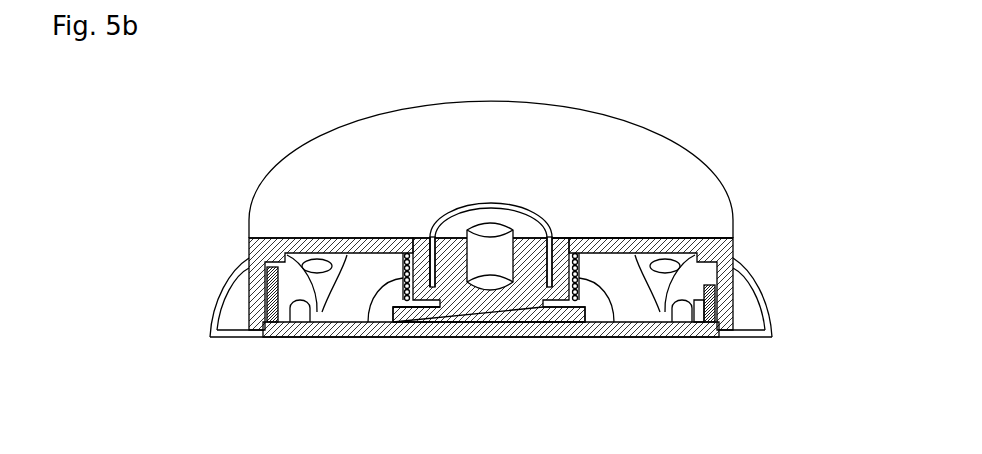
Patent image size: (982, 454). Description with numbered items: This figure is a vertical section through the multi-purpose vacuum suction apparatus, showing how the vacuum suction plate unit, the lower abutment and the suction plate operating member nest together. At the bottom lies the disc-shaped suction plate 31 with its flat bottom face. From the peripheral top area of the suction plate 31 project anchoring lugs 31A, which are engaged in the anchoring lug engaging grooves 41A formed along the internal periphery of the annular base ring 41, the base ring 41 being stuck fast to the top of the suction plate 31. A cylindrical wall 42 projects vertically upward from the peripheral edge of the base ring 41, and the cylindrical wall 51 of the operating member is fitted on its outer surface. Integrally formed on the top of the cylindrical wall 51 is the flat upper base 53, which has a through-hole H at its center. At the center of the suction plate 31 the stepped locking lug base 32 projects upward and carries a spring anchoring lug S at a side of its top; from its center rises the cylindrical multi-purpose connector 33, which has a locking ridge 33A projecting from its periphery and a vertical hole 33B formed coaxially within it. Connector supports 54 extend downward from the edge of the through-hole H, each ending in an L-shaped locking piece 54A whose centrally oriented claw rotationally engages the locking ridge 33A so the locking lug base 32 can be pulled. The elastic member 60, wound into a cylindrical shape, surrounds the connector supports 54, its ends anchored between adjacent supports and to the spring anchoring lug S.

The through-hole H is at (432, 218).
The flat upper base 53 is at (330, 197).
The cylindrical wall 42 is at (240, 272).
The suction plate 31 is at (225, 342).
The annular base ring 41 is at (273, 330).
The anchoring lugs 31A is at (298, 312).
The locking lug base 32 is at (360, 325).
The connector supports 54 is at (416, 322).
The L shaped locking piece 54A is at (437, 307).
The locking ridge 33A is at (557, 300).
The spring anchoring lug S is at (622, 288).
The anchoring lug engaging grooves 41A is at (655, 275).
The cylindrical wall 51 is at (718, 262).
The elastic member 60 is at (620, 238).
The multi-purpose connector 33 is at (545, 213).
The vertical hole 33B is at (488, 236).